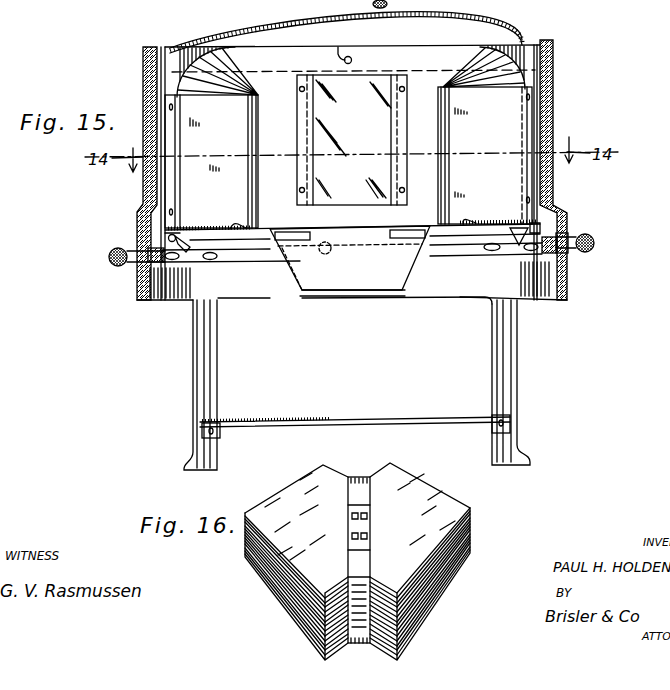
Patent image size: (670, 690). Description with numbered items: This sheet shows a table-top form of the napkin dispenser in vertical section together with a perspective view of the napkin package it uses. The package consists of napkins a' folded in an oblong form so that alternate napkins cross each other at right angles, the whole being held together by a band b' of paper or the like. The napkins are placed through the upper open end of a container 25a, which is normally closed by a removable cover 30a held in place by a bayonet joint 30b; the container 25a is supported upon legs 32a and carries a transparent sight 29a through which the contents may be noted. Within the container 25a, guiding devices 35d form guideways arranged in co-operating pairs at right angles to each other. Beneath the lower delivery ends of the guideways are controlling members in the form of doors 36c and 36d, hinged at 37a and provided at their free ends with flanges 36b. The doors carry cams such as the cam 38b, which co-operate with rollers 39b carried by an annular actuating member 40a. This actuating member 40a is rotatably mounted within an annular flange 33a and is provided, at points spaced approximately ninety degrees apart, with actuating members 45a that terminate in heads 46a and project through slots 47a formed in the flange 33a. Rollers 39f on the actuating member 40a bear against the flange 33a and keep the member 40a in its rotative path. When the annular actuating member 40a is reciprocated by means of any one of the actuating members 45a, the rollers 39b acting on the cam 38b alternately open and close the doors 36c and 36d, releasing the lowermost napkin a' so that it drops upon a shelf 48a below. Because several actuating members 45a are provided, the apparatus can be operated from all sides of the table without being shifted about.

In FIG. 15, the removable cover 30a is at (465, 25).
In FIG. 15, the bayonet joint 30b is at (350, 56).
In FIG. 15, the container 25a is at (553, 108).
In FIG. 15, the annular flange 33a is at (140, 288).
In FIG. 15, the guiding devices 35d is at (348, 157).
In FIG. 15, the transparent sight 29a is at (352, 140).
In FIG. 15, the door 36d is at (229, 228).
In FIG. 15, the hinge 37a is at (178, 231).
In FIG. 15, the cam 38b is at (187, 250).
In FIG. 15, the rollers 39b is at (170, 262).
In FIG. 15, the rollers 39f is at (492, 247).
In FIG. 15, the annular actuating member 40a is at (268, 265).
In FIG. 15, the heads 46a is at (115, 246).
In FIG. 15, the slots 47a is at (567, 235).
In FIG. 15, the actuating members 45a is at (573, 250).
In FIG. 15, the flanges 36b is at (345, 291).
In FIG. 15, the door 36c is at (407, 270).
In FIG. 15, the legs 32a is at (512, 358).
In FIG. 15, the shelf 48a is at (330, 420).
In FIG. 16, the napkins a' is at (372, 561).
In FIG. 16, the band b' is at (370, 539).